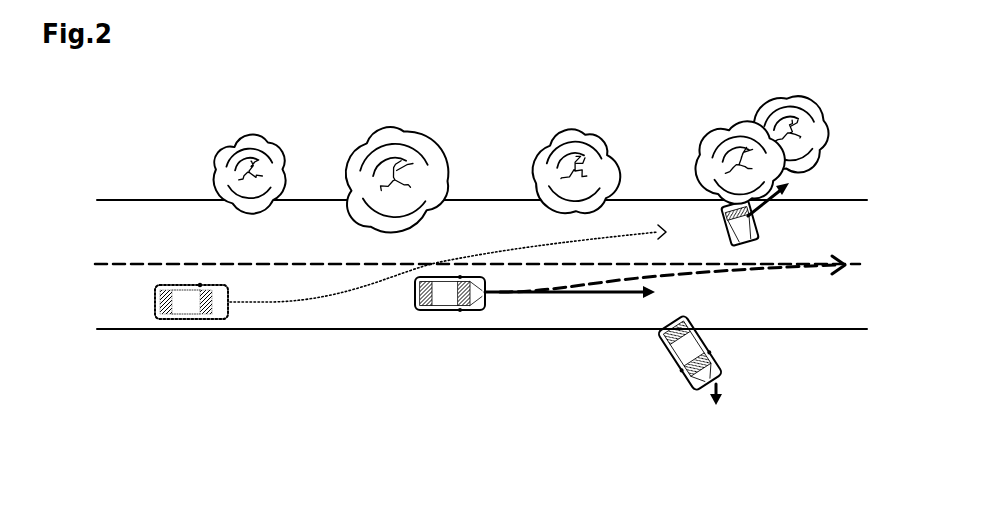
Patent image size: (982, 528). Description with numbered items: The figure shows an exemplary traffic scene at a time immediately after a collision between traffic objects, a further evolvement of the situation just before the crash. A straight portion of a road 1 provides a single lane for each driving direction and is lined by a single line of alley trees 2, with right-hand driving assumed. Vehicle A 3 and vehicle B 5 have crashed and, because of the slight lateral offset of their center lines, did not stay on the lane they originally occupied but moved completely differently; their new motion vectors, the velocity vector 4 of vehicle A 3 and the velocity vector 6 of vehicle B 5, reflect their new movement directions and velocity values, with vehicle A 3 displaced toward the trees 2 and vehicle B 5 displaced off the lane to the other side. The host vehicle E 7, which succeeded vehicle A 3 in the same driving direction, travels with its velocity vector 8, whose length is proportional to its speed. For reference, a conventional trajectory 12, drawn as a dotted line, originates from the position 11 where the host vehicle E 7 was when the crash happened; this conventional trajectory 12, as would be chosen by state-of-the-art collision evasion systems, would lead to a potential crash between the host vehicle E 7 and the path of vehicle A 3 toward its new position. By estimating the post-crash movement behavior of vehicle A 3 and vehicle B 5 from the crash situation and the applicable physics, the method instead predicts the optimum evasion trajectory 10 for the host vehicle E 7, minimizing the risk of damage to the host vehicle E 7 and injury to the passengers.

The road 1 is at (115, 352).
The alley trees 2 is at (370, 128).
The vehicle A 3 is at (721, 220).
The velocity vector of vehicle A 4 is at (789, 188).
The vehicle B 5 is at (680, 367).
The velocity vector of vehicle B 6 is at (721, 395).
The host vehicle E 7 is at (445, 311).
The velocity vector of host vehicle E 8 is at (557, 295).
The optimum evasion trajectory 10 is at (813, 268).
The position of vehicle E at time t1 11 is at (200, 312).
The conventional trajectory 12 is at (275, 303).